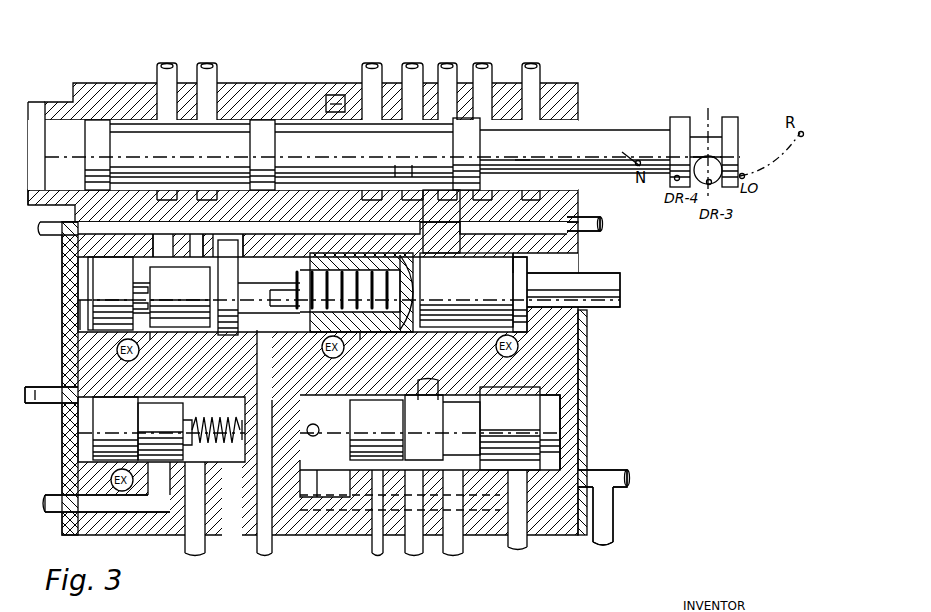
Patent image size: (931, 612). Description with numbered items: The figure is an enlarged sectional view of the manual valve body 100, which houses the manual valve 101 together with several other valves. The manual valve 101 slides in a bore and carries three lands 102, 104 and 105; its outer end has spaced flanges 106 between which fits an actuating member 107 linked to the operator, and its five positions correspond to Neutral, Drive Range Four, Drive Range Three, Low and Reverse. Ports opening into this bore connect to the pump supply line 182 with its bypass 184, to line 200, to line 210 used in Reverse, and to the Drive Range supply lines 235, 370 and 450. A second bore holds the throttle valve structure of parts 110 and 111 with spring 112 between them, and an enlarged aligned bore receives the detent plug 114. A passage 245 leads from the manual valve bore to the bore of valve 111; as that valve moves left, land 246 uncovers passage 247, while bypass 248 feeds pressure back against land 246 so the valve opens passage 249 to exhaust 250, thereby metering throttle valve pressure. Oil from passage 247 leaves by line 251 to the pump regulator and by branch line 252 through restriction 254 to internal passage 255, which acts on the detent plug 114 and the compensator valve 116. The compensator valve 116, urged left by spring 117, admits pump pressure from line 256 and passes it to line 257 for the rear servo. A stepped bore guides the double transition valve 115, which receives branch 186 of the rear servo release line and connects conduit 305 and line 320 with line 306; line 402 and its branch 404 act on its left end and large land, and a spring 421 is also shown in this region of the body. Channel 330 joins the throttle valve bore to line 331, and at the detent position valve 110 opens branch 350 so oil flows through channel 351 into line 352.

The manual valve body 100 is at (279, 79).
The manual valve 101 is at (316, 140).
The land 102 is at (100, 150).
The land 104 is at (262, 157).
The land 105 is at (466, 133).
The spaced flanges 106 is at (730, 130).
The actuating member 107 is at (714, 180).
The throttle valve part 110 is at (596, 290).
The throttle valve part 111 is at (165, 320).
The spring 112 is at (380, 325).
The detent plug 114 is at (93, 312).
The double transition valve 115 is at (562, 402).
The compensator valve 116 is at (98, 450).
The spring 117 is at (256, 392).
The line 182 is at (375, 65).
The bypass 184 is at (350, 98).
The branch 186 is at (590, 478).
The line 200 is at (168, 76).
The line 210 is at (536, 72).
The line 235 is at (415, 68).
The passage 245 is at (403, 168).
The land 246 is at (230, 268).
The passage 247 is at (237, 240).
The bypass 248 is at (193, 245).
The passage 249 is at (163, 245).
The exhaust 250 is at (124, 333).
The line 251 is at (45, 232).
The branch line 252 is at (85, 400).
The restriction 254 is at (45, 387).
The internal passage 255 is at (80, 425).
The line 256 is at (192, 540).
The line 257 is at (55, 505).
The conduit 305 is at (455, 548).
The line 306 is at (415, 548).
The line 320 is at (378, 548).
The channel 330 is at (358, 425).
The line 331 is at (266, 545).
The branch 350 is at (415, 272).
The channel 351 is at (521, 170).
The line 352 is at (585, 222).
The line 370 is at (456, 66).
The line 402 is at (520, 540).
The branch 404 is at (515, 470).
The spring 421 is at (228, 545).
The line 450 is at (487, 72).